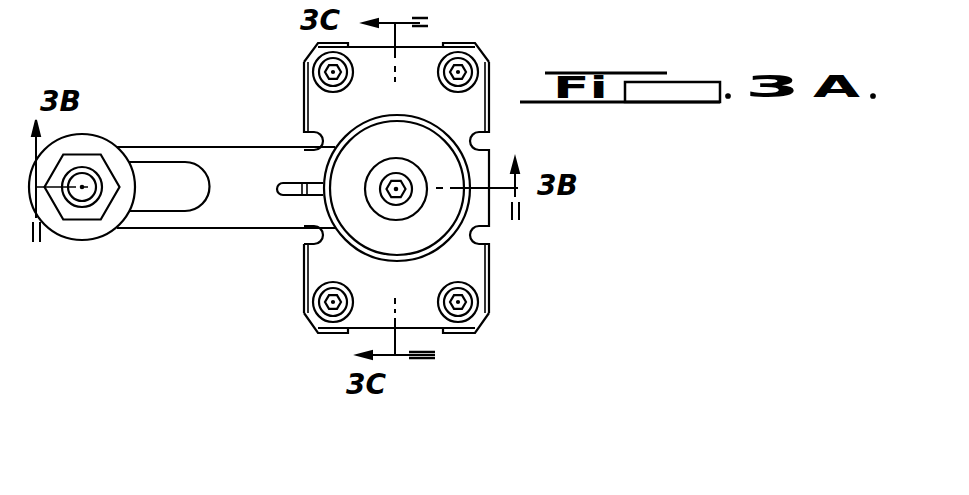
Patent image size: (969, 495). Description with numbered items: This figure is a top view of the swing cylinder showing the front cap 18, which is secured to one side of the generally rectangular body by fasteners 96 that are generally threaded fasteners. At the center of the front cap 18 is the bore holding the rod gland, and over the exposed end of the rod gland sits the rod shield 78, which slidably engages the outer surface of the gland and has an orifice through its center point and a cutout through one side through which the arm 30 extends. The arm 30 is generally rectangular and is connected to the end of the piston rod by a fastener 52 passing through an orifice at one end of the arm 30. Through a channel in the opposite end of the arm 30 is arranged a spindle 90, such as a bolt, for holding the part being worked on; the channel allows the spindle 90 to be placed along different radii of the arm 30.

The front cap 18 is at (472, 113).
The fasteners 96 is at (463, 70).
The rod shield 78 is at (358, 236).
The fastener 52 is at (398, 205).
The arm 30 is at (218, 215).
The spindle 90 is at (88, 197).